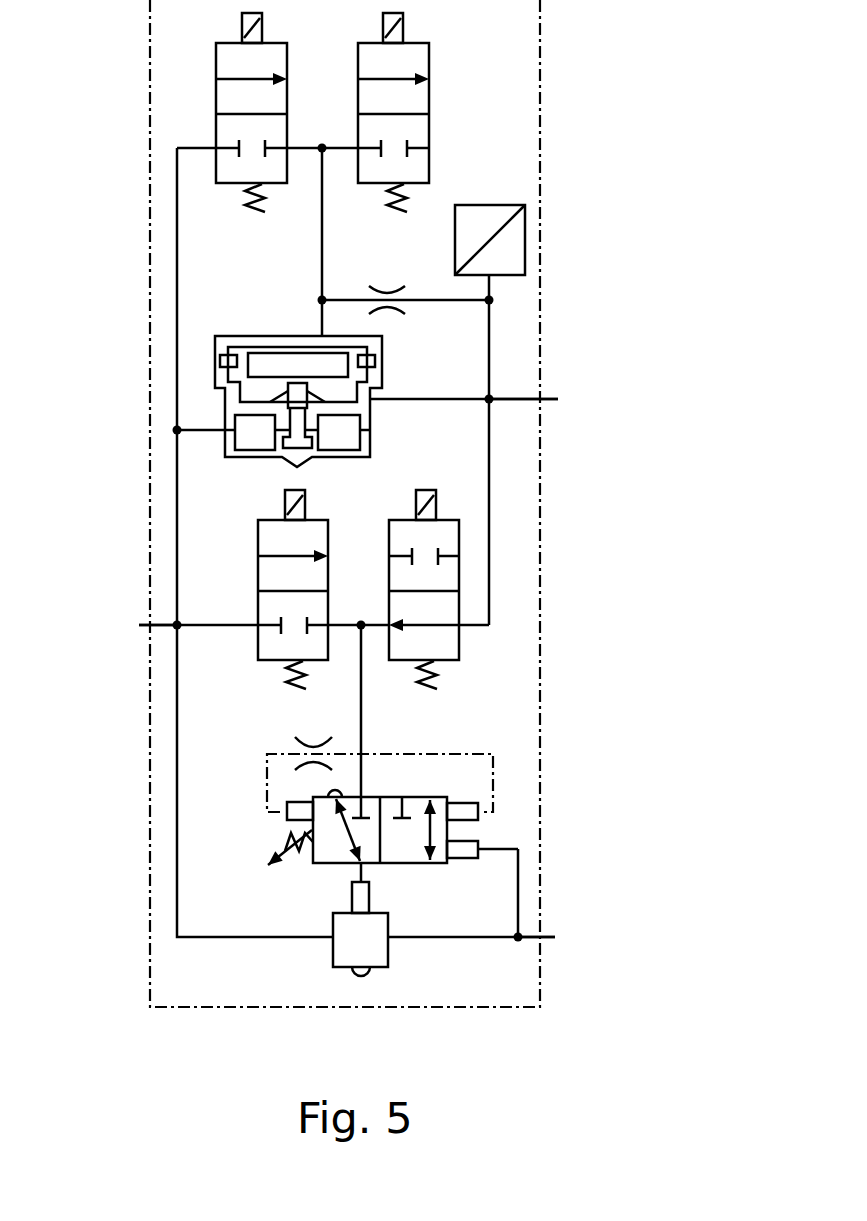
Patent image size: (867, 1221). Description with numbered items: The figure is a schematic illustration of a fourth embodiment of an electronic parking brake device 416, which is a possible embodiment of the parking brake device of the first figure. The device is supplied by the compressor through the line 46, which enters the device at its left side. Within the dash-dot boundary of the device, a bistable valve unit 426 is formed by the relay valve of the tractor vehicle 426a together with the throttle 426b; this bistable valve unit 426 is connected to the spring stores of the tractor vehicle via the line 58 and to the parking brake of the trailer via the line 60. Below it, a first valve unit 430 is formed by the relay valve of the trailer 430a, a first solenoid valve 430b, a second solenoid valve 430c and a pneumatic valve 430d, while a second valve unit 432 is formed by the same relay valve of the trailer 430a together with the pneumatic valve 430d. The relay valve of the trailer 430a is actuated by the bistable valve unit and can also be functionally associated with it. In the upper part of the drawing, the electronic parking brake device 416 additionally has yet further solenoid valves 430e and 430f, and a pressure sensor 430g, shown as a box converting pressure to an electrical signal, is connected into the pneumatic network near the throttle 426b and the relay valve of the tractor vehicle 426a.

The line 46 is at (162, 627).
The line 58 is at (550, 393).
The line 60 is at (550, 937).
The electronic parking brake device 416 is at (613, 91).
The bistable valve unit 426 is at (613, 151).
The relay valve of the tractor vehicle 426a is at (352, 437).
The throttle 426b is at (390, 290).
The first valve unit 430 is at (613, 587).
The relay valve of the trailer 430a is at (373, 950).
The first solenoid valve 430b is at (277, 648).
The second solenoid valve 430c is at (403, 648).
The pneumatic valve 430d is at (437, 842).
The solenoid valve 430e is at (238, 168).
The solenoid valve 430f is at (423, 102).
The pressure sensor 430g is at (517, 242).
The second valve unit 432 is at (613, 656).